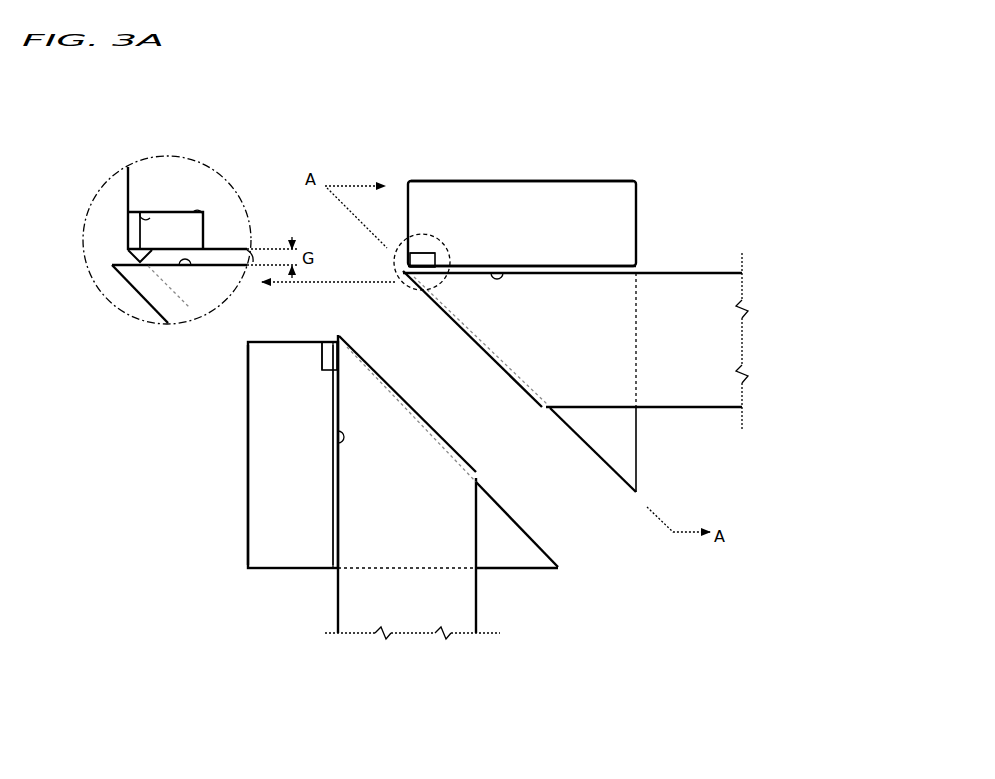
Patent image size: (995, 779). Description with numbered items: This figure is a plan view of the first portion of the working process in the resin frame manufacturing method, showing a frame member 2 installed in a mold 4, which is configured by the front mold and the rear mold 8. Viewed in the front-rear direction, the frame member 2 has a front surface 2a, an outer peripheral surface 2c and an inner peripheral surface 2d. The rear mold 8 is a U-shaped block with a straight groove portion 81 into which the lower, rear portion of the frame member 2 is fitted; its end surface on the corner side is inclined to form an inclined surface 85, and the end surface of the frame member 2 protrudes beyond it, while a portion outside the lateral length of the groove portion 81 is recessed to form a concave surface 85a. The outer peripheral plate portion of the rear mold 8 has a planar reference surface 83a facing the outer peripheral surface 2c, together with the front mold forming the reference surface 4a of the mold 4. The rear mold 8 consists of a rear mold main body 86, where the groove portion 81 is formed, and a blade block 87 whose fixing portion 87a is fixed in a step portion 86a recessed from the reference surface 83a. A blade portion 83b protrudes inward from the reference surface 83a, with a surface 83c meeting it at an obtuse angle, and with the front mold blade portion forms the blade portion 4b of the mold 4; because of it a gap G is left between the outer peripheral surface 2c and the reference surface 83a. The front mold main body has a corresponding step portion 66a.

The frame member 2 is at (746, 286).
The front surface 2a is at (730, 345).
The outer peripheral surface 2c is at (698, 272).
The inner peripheral surface 2d is at (693, 408).
The mold 4 is at (594, 178).
The reference surface 4a is at (502, 266).
The blade portion 4b is at (426, 262).
The rear mold 8 is at (548, 180).
The groove portion 81 is at (583, 265).
The inclined surface 85 is at (500, 372).
The concave surface 85a is at (407, 199).
The rear mold main body 86 is at (237, 200).
The step portion 86a is at (211, 222).
The blade block 87 is at (143, 127).
The fixing portion 87a is at (177, 230).
The reference surface 83a is at (258, 249).
The blade portion 83b is at (145, 332).
The surface 83c is at (139, 302).
The step portion 66a is at (128, 228).